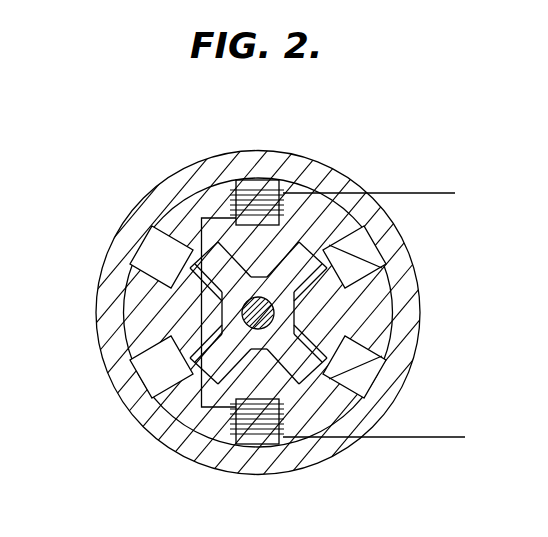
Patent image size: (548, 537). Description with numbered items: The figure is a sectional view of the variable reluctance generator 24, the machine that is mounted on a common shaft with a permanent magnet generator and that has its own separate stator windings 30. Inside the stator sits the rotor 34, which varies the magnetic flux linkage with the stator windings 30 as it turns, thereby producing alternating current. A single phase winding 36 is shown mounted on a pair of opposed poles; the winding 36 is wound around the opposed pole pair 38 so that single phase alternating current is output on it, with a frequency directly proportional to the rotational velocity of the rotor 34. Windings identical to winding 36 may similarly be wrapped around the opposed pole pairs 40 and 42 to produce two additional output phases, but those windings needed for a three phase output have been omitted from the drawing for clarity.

The variable reluctance generator 24 is at (381, 142).
The stator windings 30 is at (108, 333).
The rotor 34 is at (200, 370).
The single phase winding 36 is at (432, 197).
The opposed pole pair 38 is at (258, 187).
The opposed pole pair 40 is at (155, 257).
The opposed pole pair 42 is at (235, 379).